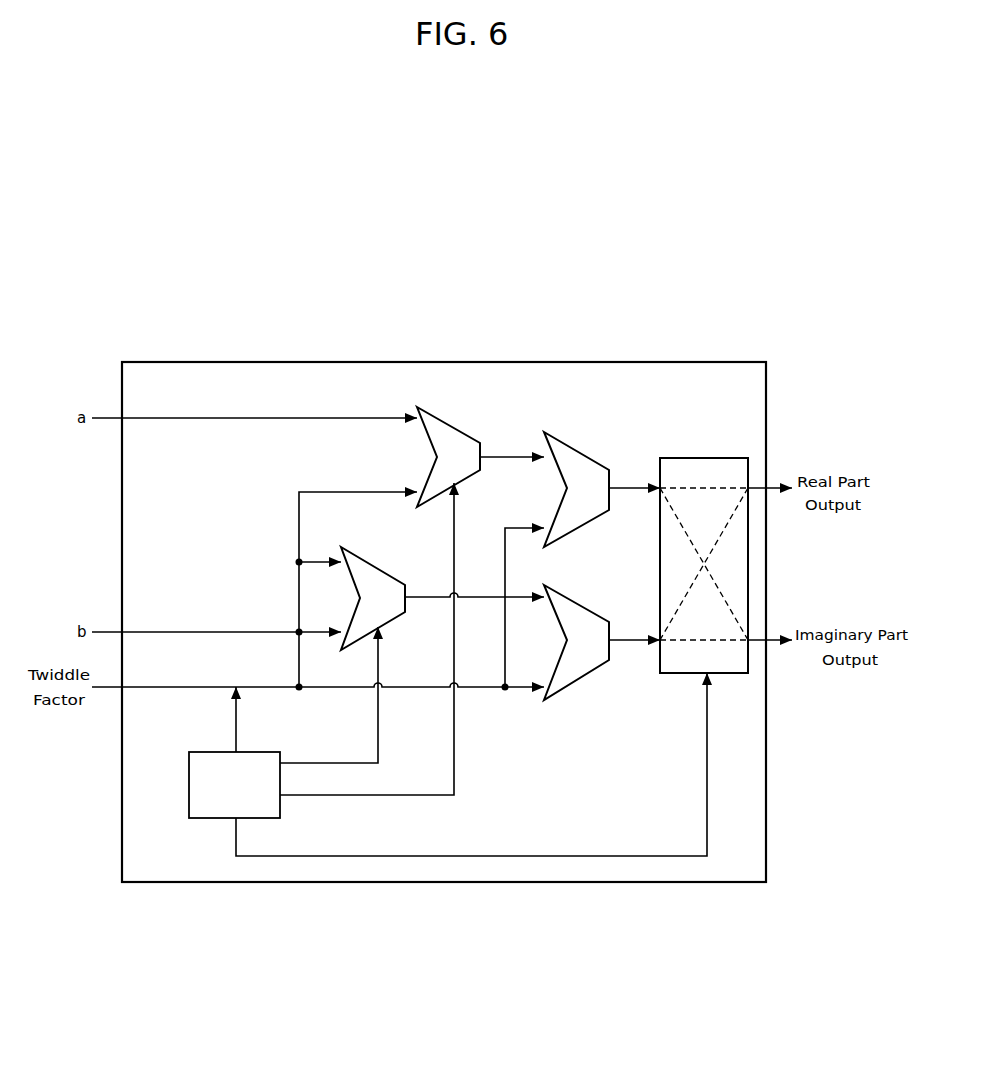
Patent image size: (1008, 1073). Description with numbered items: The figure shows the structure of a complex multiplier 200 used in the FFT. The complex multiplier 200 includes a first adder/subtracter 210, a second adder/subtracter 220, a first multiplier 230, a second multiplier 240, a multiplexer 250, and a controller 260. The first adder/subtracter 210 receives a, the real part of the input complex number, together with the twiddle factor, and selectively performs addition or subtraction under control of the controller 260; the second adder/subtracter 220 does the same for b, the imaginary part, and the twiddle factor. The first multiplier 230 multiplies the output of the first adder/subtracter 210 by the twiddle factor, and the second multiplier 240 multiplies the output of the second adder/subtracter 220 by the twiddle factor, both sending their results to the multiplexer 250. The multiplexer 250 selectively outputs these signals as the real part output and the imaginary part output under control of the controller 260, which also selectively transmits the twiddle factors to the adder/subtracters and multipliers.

The complex multiplier 200 is at (722, 362).
The first adder/subtracter 210 is at (449, 424).
The second adder/subtracter 220 is at (377, 563).
The first multiplier 230 is at (577, 448).
The second multiplier 240 is at (577, 600).
The multiplexer 250 is at (722, 458).
The controller 260 is at (189, 765).